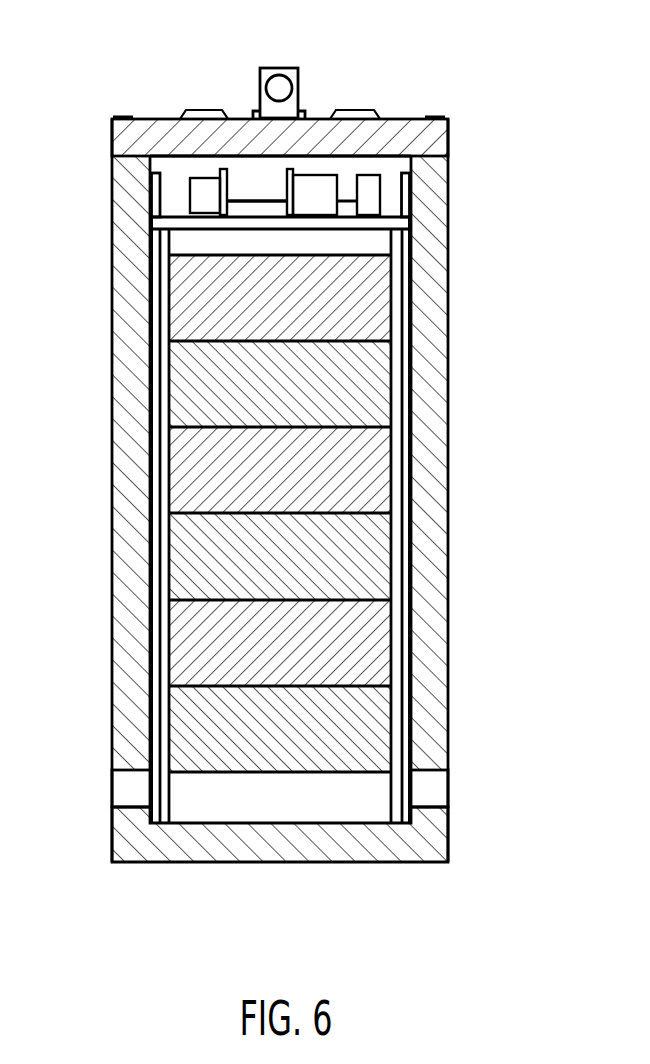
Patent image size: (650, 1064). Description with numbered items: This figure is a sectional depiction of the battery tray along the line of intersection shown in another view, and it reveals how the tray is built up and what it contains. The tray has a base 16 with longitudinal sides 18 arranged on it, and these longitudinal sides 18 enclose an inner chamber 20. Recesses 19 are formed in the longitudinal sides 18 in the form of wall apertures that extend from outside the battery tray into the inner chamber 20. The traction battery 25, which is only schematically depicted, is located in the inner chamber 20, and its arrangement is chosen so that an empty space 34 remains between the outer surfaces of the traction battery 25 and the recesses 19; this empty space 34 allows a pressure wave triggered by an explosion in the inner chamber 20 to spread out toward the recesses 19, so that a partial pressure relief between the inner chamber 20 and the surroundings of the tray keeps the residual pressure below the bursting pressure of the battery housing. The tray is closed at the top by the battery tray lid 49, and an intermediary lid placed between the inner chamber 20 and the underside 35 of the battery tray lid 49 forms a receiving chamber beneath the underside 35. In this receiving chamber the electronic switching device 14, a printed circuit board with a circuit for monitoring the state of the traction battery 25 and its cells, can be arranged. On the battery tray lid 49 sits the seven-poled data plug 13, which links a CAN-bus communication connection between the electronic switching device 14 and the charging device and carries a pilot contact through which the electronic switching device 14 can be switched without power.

The data plug 13 is at (285, 68).
The electronic switching device 14 is at (406, 198).
The base 16 is at (358, 863).
The longitudinal sides 18 is at (155, 723).
The recesses 19 is at (115, 788).
The inner chamber 20 is at (405, 657).
The traction battery 25 is at (167, 555).
The empty space 34 is at (408, 693).
The underside of the battery tray lid 35 is at (177, 158).
The battery tray lid 49 is at (150, 118).